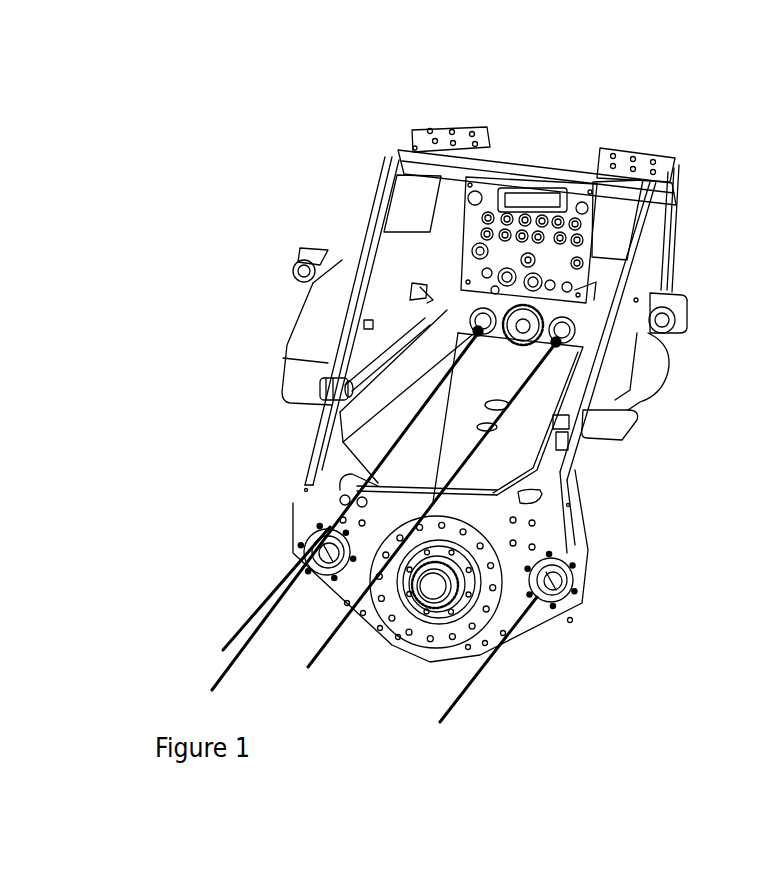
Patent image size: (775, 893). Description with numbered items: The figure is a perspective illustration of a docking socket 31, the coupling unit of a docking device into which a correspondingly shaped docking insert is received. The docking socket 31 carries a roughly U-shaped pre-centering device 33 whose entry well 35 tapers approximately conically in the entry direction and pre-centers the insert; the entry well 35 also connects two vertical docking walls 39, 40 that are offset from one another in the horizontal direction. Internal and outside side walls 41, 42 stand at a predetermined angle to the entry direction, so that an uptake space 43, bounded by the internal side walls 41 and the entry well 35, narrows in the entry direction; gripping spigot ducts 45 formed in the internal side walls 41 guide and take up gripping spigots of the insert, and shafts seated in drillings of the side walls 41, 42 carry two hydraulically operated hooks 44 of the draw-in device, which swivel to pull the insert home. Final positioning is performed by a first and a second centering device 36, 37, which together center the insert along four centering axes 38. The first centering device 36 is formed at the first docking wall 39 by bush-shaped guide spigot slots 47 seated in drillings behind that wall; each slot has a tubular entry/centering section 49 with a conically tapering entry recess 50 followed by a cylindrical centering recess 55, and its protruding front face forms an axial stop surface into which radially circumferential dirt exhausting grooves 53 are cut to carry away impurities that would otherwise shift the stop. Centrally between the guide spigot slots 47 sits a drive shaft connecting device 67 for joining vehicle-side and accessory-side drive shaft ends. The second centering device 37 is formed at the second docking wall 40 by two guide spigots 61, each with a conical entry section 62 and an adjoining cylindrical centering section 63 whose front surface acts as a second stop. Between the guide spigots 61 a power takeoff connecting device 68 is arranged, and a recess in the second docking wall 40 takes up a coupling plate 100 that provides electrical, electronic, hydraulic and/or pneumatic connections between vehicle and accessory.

The docking socket 31 is at (382, 87).
The pre-centering device 33 is at (502, 402).
The entry well 35 is at (449, 475).
The first centering device 36 is at (566, 571).
The second centering device 37 is at (598, 343).
The centering axes 38 is at (245, 623).
The first docking wall 39 is at (547, 522).
The second docking wall 40 is at (458, 176).
The internal side walls 41 is at (422, 372).
The outside side walls 42 is at (332, 335).
The uptake space 43 is at (426, 434).
The hooks 44 is at (380, 277).
The gripping spigot ducts 45 is at (380, 322).
The bush-shaped guide spigot slots 47 is at (312, 528).
The tubular entry/centering section 49 is at (298, 546).
The entry recess 50 is at (328, 552).
The dirt exhausting grooves 53 is at (552, 588).
The cylindrical centering recess 55 is at (329, 552).
The guide spigots 61 is at (470, 306).
The conical entry section 62 is at (523, 325).
The cylindrical centering section 63 is at (562, 332).
The drive shaft connecting device 67 is at (418, 617).
The power takeoff connecting device 68 is at (575, 290).
The coupling plate 100 is at (530, 184).